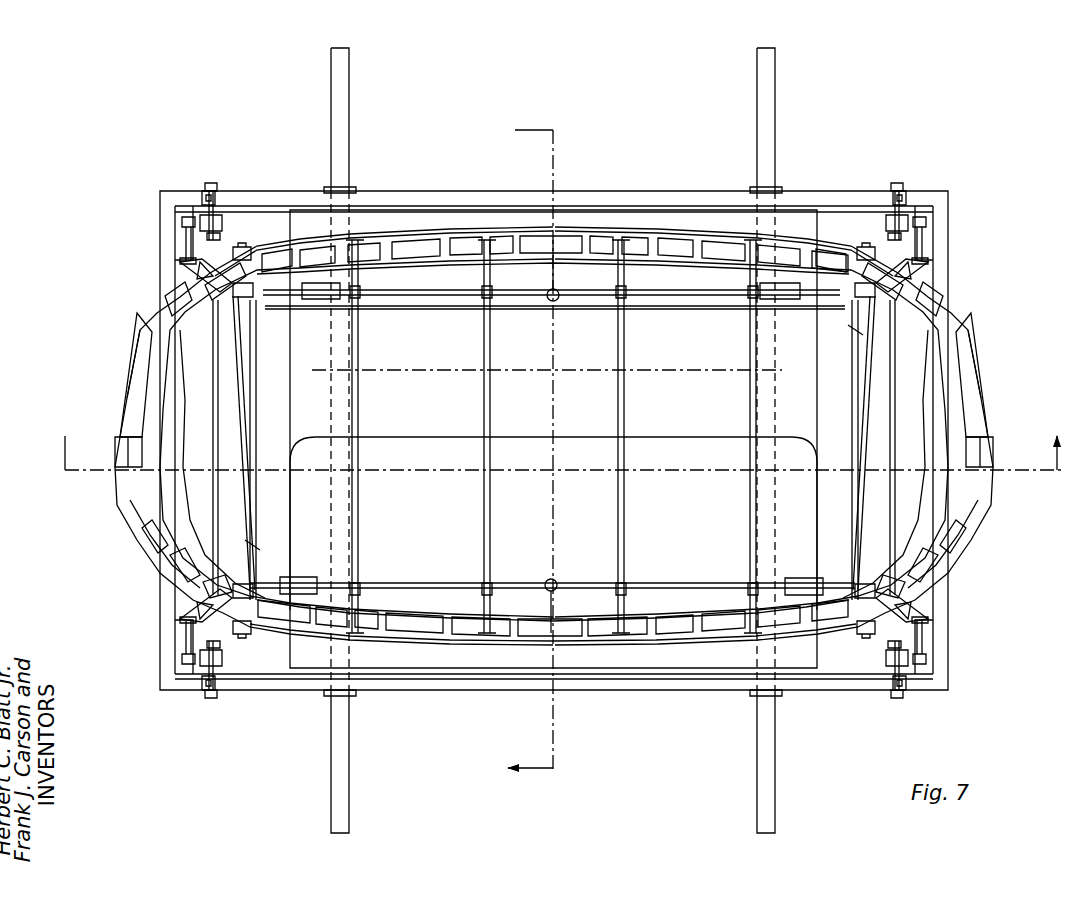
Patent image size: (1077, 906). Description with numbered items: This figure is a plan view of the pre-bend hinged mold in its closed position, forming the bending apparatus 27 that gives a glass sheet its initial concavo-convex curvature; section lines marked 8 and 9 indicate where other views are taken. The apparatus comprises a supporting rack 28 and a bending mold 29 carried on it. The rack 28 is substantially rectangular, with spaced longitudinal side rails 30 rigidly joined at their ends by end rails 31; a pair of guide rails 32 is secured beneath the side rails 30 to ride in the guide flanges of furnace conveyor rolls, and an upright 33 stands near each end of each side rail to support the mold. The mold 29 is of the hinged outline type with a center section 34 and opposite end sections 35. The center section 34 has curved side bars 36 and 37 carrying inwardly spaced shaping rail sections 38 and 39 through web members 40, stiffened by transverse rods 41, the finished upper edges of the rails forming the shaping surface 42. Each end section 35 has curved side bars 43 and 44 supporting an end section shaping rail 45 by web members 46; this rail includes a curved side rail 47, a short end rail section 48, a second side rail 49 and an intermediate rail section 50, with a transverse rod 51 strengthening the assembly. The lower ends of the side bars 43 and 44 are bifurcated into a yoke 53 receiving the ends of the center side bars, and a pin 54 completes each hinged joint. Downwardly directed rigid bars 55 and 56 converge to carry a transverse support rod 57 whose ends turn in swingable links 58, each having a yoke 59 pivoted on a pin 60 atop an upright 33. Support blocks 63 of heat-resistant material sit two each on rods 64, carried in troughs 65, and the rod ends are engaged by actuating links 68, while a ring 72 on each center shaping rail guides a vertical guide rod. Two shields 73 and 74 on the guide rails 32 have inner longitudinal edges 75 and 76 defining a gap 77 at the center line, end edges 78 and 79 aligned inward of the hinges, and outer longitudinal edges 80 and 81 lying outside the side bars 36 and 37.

The bending apparatus 27 is at (185, 158).
The supporting rack 28 is at (397, 195).
The bending mold 29 is at (150, 332).
The side rails 30 is at (663, 205).
The end rails 31 is at (172, 233).
The guide rails 32 is at (345, 742).
The upright 33 is at (220, 197).
The center section 34 is at (660, 647).
The end sections 35 is at (132, 377).
The side bar 36 is at (578, 232).
The side bar 37 is at (690, 638).
The shaping rail section 38 is at (676, 270).
The shaping rail section 39 is at (665, 605).
The web members 40 is at (665, 243).
The transverse rods 41 is at (358, 415).
The shaping surface 42 is at (413, 605).
The side bar 43 is at (163, 300).
The side bar 44 is at (147, 547).
The end section shaping rail 45 is at (165, 360).
The web members 46 is at (147, 520).
The side rail 47 is at (170, 570).
The end rail section 48 is at (125, 450).
The side rail 49 is at (223, 325).
The intermediate rail section 50 is at (222, 415).
The transverse rod 51 is at (222, 445).
The yoke 53 is at (282, 296).
The pin 54 is at (250, 256).
The rigid bar 55 is at (183, 265).
The rigid bar 56 is at (205, 265).
The transverse support rod 57 is at (185, 638).
The swingable link 58 is at (183, 220).
The yoke 59 is at (203, 218).
The pin 60 is at (210, 200).
The support blocks 63 is at (322, 300).
The rods 64 is at (400, 298).
The trough 65 is at (747, 300).
The actuating links 68 is at (272, 548).
The ring 72 is at (549, 300).
The shield 73 is at (450, 310).
The shield 74 is at (418, 460).
The inner longitudinal edge 75 is at (585, 311).
The inner longitudinal edge 76 is at (565, 440).
The gap 77 is at (580, 368).
The end edges 78 is at (293, 236).
The end edges 79 is at (290, 498).
The outer longitudinal edge 80 is at (470, 213).
The outer longitudinal edge 81 is at (613, 674).
The section line 8- 8 is at (554, 449).
The section line 9- 9 is at (530, 448).